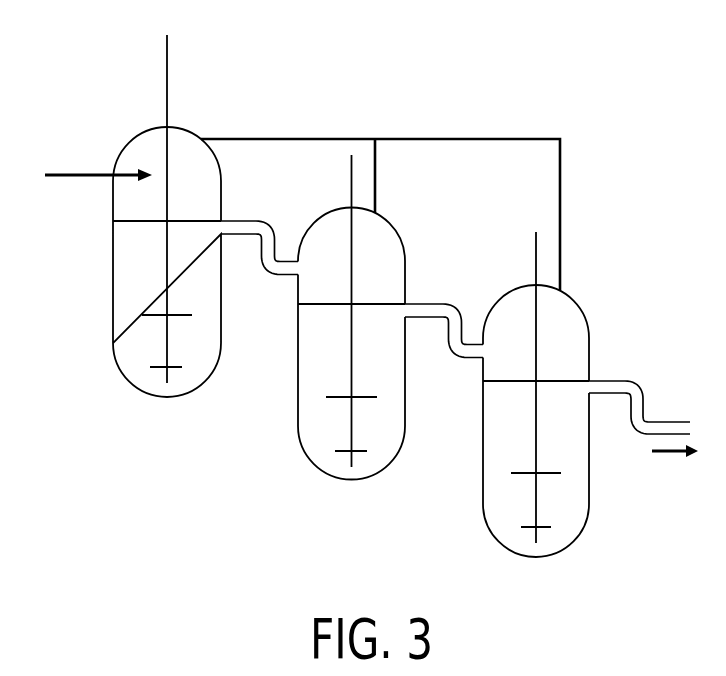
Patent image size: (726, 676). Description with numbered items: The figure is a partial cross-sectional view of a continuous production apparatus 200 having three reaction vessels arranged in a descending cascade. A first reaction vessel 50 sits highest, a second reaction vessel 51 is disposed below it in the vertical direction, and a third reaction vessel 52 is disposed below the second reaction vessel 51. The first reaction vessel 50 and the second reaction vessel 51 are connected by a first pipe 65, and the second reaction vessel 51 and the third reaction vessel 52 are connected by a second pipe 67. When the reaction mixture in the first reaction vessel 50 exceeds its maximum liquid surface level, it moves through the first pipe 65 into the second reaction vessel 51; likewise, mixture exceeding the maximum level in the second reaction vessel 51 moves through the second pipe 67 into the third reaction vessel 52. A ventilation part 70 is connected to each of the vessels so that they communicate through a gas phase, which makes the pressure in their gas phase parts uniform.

The continuous production apparatus 200 is at (613, 53).
The first reaction vessel 50 is at (127, 145).
The second reaction vessel 51 is at (313, 225).
The third reaction vessel 52 is at (500, 302).
The first pipe 65 is at (272, 265).
The second pipe 67 is at (458, 350).
The ventilation part 70 is at (270, 137).